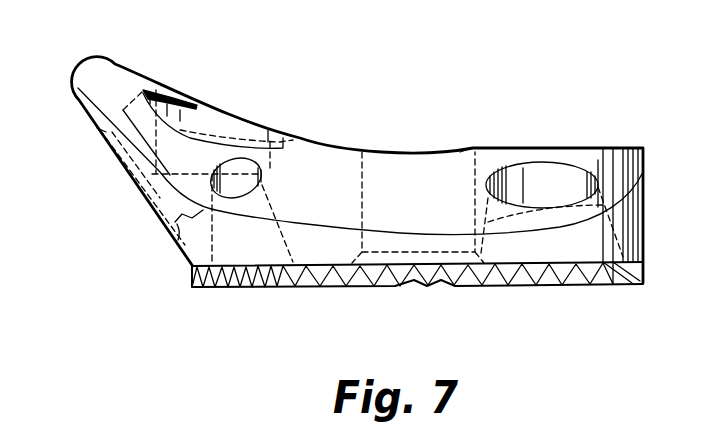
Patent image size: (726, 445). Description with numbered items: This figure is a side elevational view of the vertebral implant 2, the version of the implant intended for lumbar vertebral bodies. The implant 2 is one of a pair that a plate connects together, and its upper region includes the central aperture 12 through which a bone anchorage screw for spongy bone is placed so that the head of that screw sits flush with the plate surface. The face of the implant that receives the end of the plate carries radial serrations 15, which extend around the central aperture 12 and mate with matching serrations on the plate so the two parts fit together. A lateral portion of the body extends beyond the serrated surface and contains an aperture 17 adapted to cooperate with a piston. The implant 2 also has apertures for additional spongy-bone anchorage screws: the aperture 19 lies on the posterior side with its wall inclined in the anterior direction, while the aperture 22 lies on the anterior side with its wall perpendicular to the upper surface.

The vertebral implant 2 is at (592, 127).
The central aperture 12 is at (448, 173).
The radial serrations 15 is at (283, 286).
The aperture 17 is at (200, 125).
The aperture 19 is at (510, 176).
The aperture 22 is at (273, 158).